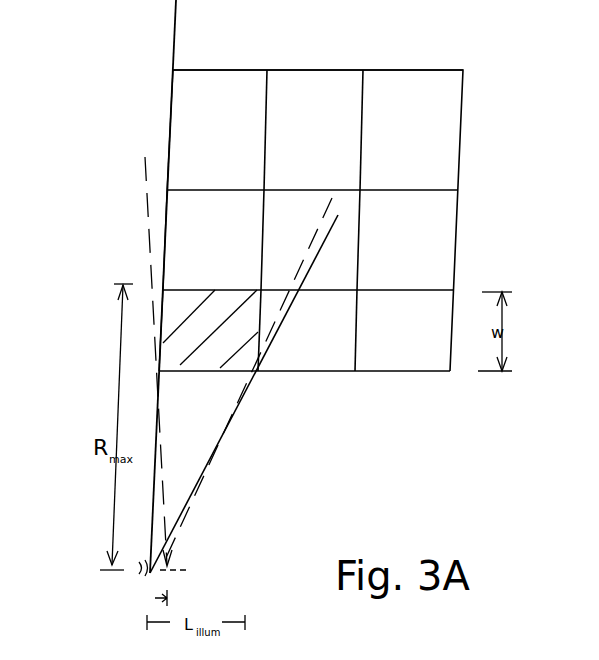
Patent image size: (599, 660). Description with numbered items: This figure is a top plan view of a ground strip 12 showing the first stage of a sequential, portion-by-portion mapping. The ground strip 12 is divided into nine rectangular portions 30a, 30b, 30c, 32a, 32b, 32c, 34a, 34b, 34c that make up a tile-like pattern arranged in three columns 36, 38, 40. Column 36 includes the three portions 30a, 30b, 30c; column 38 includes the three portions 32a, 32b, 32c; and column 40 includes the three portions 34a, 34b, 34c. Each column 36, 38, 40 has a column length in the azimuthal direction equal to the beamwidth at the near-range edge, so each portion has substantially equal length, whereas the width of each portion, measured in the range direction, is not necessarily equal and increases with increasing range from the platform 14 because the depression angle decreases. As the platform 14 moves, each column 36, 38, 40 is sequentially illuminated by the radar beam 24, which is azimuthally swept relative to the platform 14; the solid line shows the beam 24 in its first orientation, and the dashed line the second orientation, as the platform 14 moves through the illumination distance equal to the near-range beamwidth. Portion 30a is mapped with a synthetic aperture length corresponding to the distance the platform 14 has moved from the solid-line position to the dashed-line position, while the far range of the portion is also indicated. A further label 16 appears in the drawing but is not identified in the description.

The ground strip 12 is at (450, 78).
The platform 14 is at (145, 577).
The illumination width 16 is at (157, 601).
The radar beam 24 is at (203, 486).
The portion 30a is at (178, 292).
The portion 30b is at (185, 225).
The portion 30c is at (195, 112).
The portion 32a is at (328, 360).
The portion 32b is at (345, 270).
The portion 32c is at (338, 92).
The portion 34a is at (420, 360).
The portion 34b is at (433, 226).
The portion 34c is at (443, 118).
The column 36 is at (214, 70).
The column 38 is at (305, 70).
The column 40 is at (405, 70).